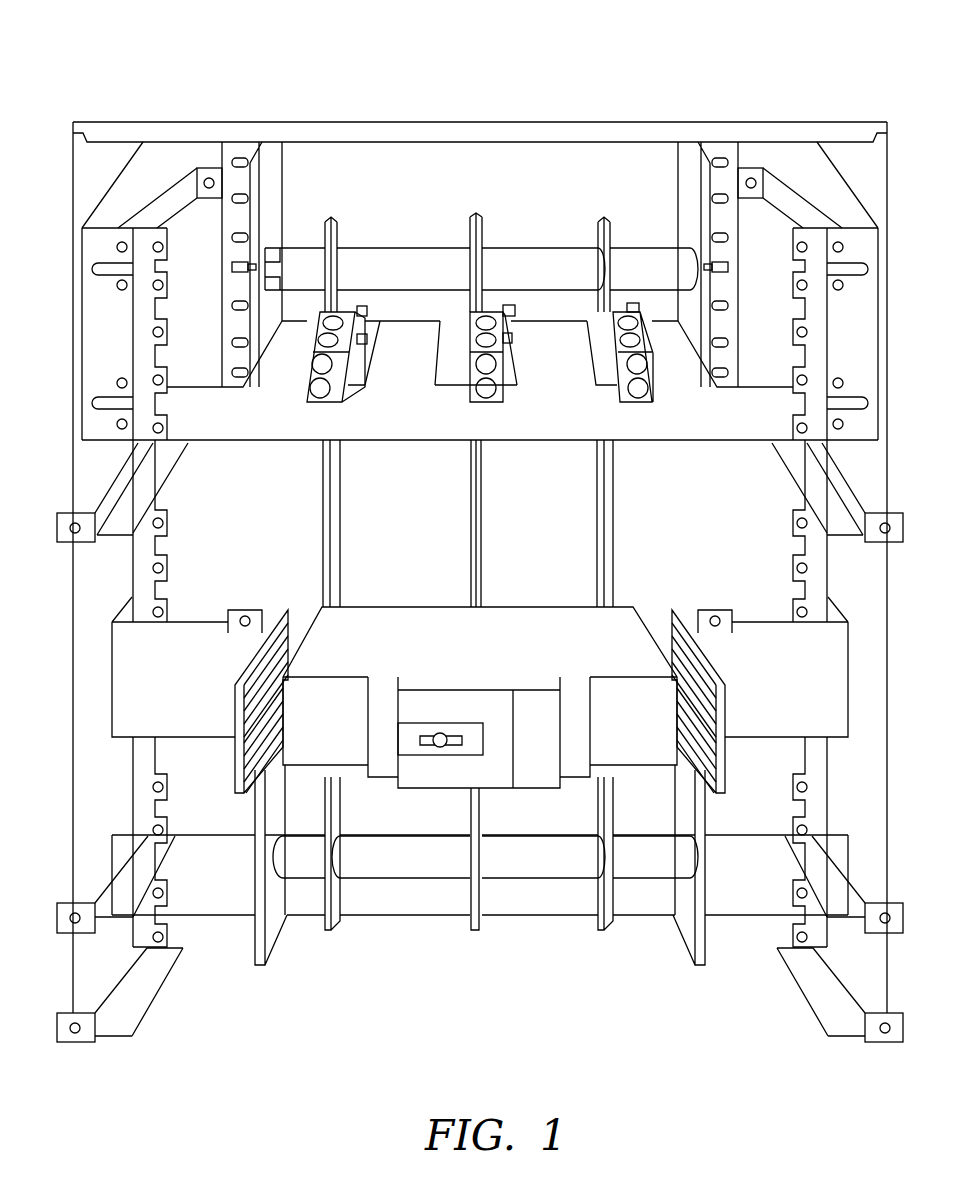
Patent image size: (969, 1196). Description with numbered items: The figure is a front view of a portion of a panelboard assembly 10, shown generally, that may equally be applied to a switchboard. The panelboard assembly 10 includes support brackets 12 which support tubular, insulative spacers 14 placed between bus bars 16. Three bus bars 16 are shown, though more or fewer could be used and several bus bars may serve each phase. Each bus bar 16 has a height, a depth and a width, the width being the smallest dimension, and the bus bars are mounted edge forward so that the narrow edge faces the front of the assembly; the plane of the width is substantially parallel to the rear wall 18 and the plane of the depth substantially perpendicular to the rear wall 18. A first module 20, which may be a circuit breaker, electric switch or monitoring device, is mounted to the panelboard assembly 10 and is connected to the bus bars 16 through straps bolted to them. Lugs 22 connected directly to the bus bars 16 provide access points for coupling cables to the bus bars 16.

The panelboard assembly 10 is at (260, 90).
The support brackets 12 is at (278, 158).
The tubular, insulative spacers 14 is at (293, 247).
The bus bars 16 is at (333, 217).
The rear wall 18 is at (522, 908).
The first module 20 is at (503, 612).
The lugs 22 is at (305, 393).